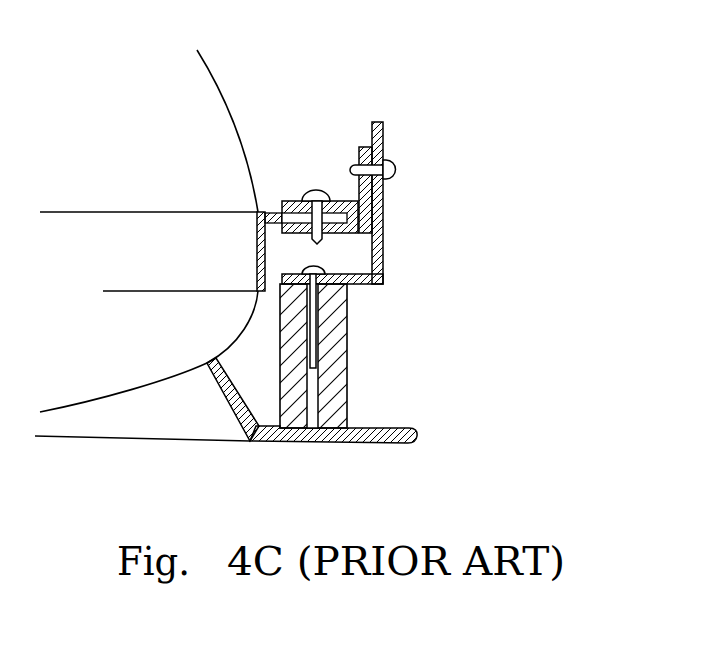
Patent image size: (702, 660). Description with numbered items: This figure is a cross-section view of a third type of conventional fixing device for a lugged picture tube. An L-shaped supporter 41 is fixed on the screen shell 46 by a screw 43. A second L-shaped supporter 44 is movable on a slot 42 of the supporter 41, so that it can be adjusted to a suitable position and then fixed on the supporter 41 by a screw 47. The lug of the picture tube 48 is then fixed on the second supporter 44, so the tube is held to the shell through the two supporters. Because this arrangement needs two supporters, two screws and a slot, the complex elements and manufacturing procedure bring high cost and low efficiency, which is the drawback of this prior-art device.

The L-shaped supporter 41 is at (387, 240).
The slot 42 is at (387, 137).
The screw 43 is at (318, 318).
The second L-shaped supporter 44 is at (360, 198).
The screen shell 46 is at (330, 363).
The screw 47 is at (392, 173).
The picture tube 48 is at (238, 225).